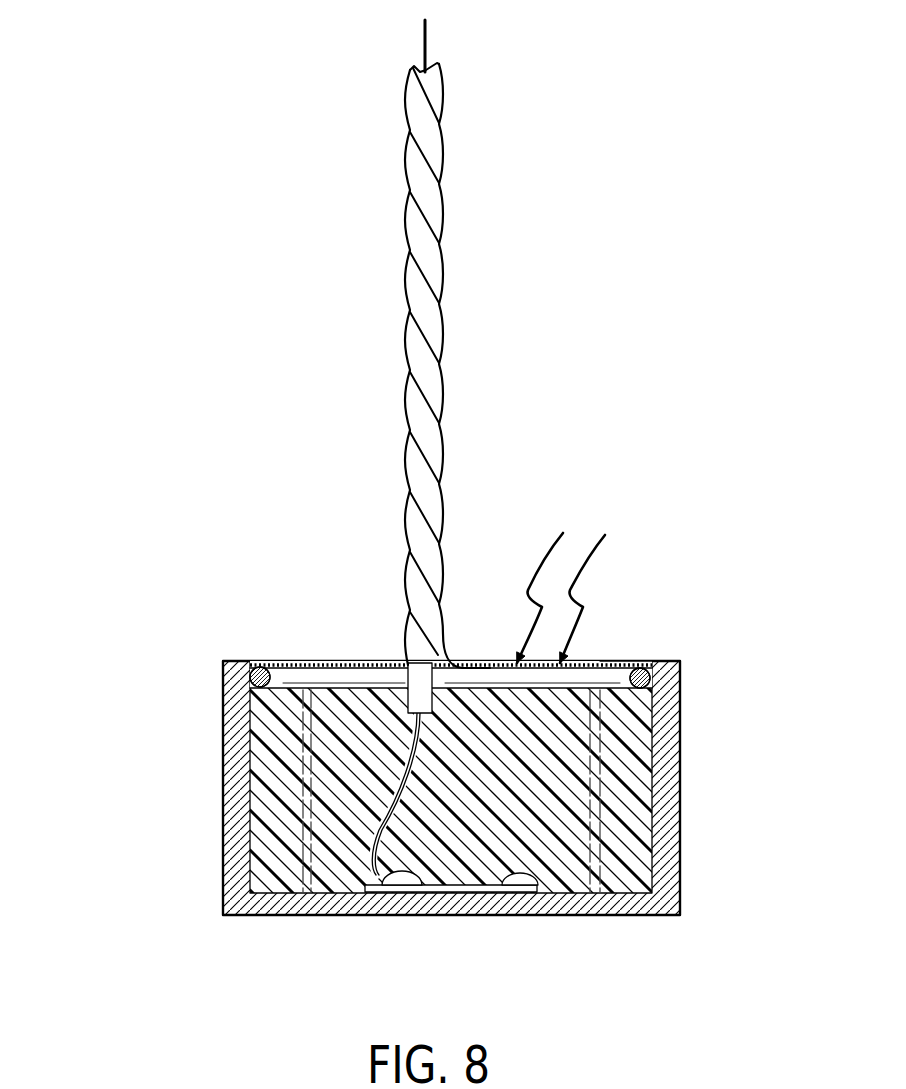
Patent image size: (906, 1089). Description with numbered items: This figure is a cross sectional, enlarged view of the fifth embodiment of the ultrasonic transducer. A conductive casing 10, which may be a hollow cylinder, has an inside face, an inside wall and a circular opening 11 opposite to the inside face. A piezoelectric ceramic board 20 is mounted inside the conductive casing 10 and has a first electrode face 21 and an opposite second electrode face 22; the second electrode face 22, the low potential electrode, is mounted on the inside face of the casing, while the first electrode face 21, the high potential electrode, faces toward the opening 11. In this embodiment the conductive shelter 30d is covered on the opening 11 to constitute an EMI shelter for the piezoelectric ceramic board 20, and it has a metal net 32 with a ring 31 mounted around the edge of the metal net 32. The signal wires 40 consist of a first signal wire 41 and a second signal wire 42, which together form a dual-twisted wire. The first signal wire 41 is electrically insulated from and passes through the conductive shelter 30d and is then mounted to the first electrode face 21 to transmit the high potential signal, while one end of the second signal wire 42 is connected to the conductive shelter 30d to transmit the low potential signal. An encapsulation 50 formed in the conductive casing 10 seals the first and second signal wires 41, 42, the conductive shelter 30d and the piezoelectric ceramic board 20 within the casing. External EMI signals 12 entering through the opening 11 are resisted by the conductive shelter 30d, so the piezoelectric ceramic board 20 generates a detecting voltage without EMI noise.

The conductive casing 10 is at (670, 795).
The opening 11 is at (632, 665).
The EMI signals 12 is at (603, 545).
The piezoelectric ceramic board 20 is at (477, 888).
The first electrode face 21 is at (530, 875).
The second electrode face 22 is at (403, 896).
The conductive shelter 30d is at (250, 677).
The ring 31 is at (650, 682).
The metal net 32 is at (308, 718).
The signal wires 40 is at (452, 210).
The first signal wire 41 is at (410, 117).
The second signal wire 42 is at (433, 88).
The encapsulation 50 is at (372, 680).